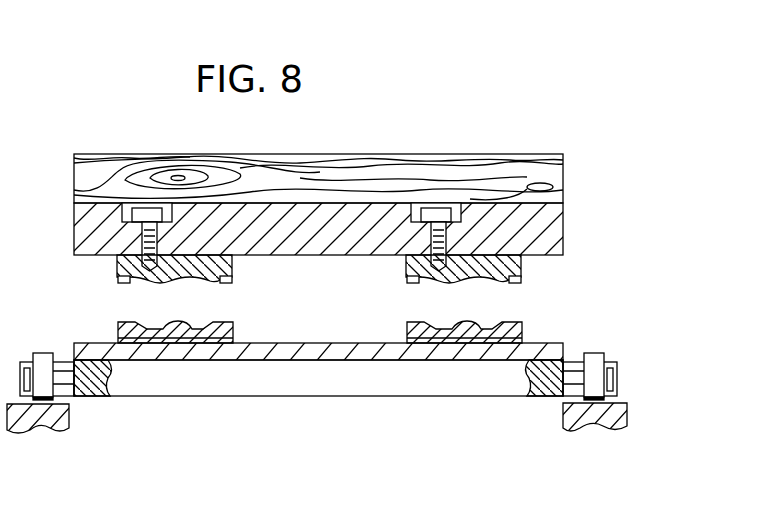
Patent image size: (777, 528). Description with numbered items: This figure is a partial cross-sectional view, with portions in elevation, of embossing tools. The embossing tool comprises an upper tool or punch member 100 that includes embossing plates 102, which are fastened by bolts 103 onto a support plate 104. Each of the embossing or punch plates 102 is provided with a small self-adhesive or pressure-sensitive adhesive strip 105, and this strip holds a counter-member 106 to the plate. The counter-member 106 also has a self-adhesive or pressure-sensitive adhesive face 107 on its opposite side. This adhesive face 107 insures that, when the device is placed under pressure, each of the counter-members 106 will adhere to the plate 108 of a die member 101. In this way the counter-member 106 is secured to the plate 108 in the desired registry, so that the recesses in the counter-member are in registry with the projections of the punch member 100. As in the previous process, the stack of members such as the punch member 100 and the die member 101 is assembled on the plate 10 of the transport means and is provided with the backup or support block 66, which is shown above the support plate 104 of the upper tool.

The backup or support block 66 is at (326, 172).
The upper tool or punch member 100 is at (572, 216).
The support plate 104 is at (553, 240).
The bolts 103 is at (433, 237).
The embossing plates 102 is at (310, 282).
The self-adhesive or pressure-sensitive adhesive strip 105 is at (226, 283).
The die member 101 is at (576, 344).
The self-adhesive or pressure-sensitive adhesive face 107 is at (172, 343).
The plate 108 is at (308, 353).
The counter-member 106 is at (118, 328).
The plate of the transport means 10 is at (525, 388).